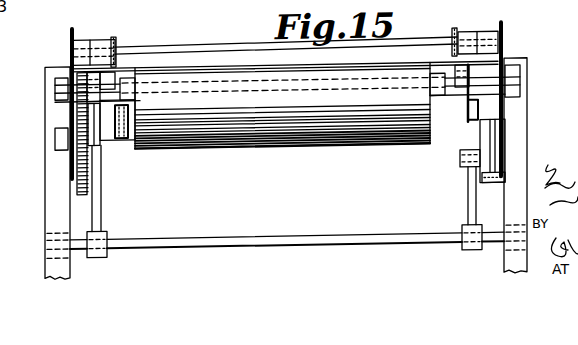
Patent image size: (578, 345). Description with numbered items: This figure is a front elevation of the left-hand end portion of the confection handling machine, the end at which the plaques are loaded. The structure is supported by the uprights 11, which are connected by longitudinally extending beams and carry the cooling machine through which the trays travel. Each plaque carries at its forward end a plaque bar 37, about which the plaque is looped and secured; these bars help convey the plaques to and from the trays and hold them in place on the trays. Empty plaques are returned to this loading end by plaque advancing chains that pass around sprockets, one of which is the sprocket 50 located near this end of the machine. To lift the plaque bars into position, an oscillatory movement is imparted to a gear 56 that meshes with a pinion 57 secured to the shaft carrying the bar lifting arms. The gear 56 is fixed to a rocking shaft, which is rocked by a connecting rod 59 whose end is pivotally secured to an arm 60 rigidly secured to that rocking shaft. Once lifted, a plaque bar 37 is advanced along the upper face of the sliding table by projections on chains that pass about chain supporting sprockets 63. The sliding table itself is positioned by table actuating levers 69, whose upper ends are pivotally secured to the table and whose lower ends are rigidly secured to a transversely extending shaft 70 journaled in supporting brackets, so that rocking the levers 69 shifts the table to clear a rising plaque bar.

The upright 11 is at (537, 66).
The plaque bar 37 is at (203, 66).
The sprocket 50 is at (143, 142).
The gear 56 is at (78, 168).
The pinion 57 is at (72, 96).
The connecting rod 59 is at (490, 189).
The arm 60 is at (95, 144).
The chain supporting sprocket 63 is at (112, 37).
The table actuating lever 69 is at (103, 199).
The transversely extending shaft 70 is at (268, 235).